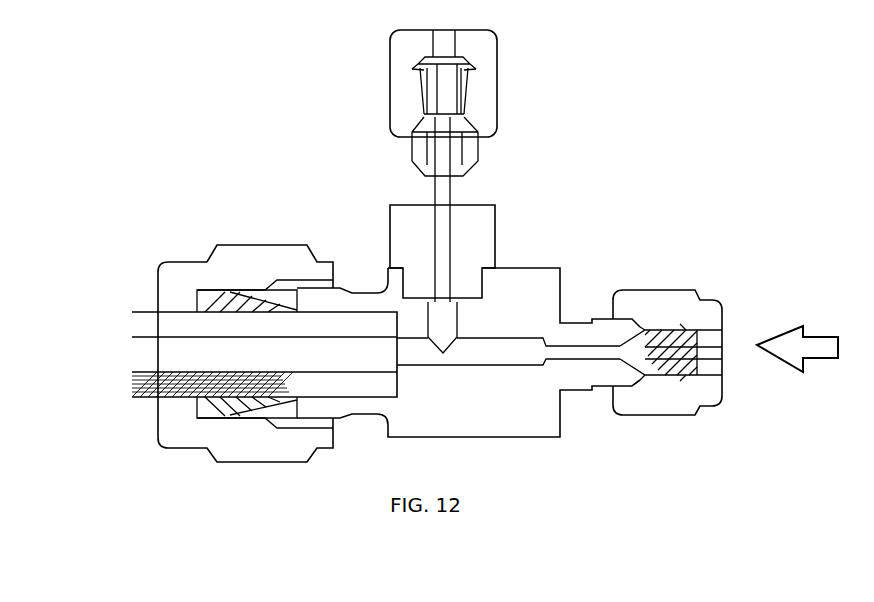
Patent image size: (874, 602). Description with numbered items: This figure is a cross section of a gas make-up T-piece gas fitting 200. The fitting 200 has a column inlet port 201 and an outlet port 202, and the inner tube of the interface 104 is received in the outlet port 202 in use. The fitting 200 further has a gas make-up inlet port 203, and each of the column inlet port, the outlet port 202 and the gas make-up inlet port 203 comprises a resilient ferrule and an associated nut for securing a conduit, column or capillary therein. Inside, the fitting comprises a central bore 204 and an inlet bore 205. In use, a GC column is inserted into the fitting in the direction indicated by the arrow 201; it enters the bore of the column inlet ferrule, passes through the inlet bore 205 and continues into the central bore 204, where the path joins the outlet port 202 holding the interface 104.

The gas make-up T-piece gas fitting 200 is at (630, 80).
The column inlet port 201 is at (808, 325).
The outlet port 202 is at (178, 228).
The gas make-up inlet port 203 is at (516, 154).
The central bore 204 is at (516, 370).
The inlet bore 205 is at (584, 356).
The interface 104 is at (136, 402).